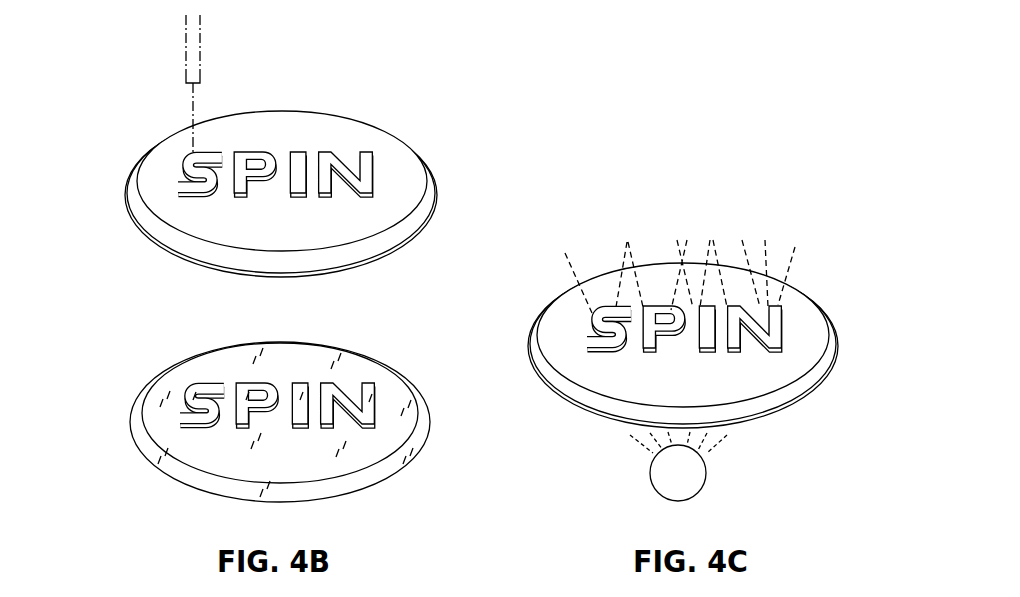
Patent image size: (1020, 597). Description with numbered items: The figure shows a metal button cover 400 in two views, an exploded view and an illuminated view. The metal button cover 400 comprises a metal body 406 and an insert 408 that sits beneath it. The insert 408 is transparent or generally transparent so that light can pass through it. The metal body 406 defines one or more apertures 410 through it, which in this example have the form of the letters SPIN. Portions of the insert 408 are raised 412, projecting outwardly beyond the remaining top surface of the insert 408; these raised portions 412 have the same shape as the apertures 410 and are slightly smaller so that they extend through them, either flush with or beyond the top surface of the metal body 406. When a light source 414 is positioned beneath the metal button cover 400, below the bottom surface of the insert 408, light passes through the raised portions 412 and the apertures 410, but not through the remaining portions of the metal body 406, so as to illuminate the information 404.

In FIG. 4B, the metal button cover 400 is at (140, 117).
In FIG. 4C, the metal button cover 400 is at (842, 270).
In FIG. 4C, the information 404 is at (807, 237).
In FIG. 4B, the metal body 406 is at (422, 149).
In FIG. 4C, the metal body 406 is at (840, 333).
In FIG. 4B, the insert 408 is at (306, 425).
In FIG. 4B, the apertures 410 is at (248, 152).
In FIG. 4B, the raised portions 412 is at (367, 388).
In FIG. 4C, the light source 414 is at (707, 476).